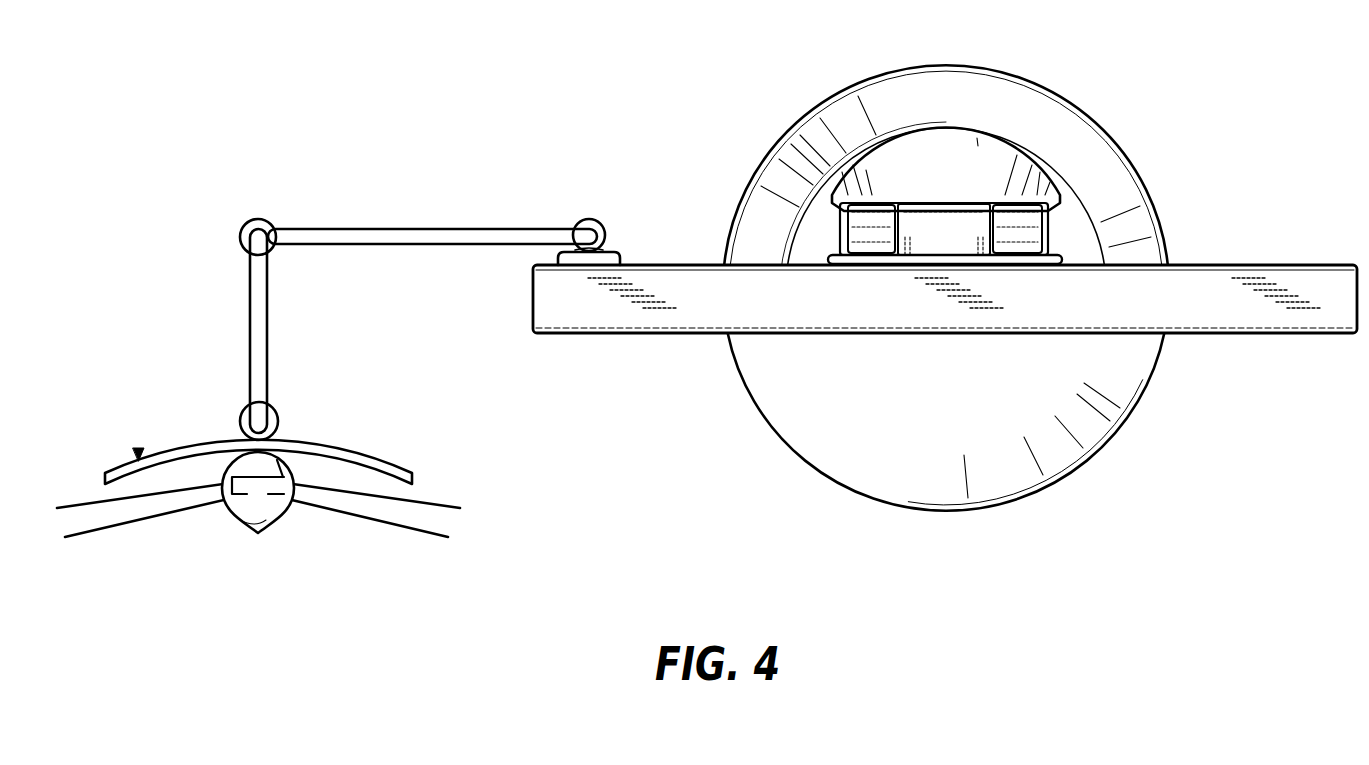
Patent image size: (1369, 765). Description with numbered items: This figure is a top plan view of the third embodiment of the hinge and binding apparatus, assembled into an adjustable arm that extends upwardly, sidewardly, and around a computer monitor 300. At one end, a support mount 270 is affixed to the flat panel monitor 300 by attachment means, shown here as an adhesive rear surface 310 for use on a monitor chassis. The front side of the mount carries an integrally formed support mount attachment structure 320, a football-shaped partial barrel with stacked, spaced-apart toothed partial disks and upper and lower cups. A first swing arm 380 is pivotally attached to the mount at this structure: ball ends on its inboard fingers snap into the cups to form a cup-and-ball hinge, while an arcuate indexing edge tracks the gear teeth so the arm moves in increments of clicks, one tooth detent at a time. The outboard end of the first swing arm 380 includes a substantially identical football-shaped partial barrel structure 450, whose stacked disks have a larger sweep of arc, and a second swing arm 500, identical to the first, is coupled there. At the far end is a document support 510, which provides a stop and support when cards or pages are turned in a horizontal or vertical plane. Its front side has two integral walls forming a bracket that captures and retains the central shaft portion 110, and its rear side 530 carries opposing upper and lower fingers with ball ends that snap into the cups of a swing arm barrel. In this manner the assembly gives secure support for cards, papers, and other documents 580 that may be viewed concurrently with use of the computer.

The central shaft portion 110 is at (240, 518).
The support mount 270 is at (615, 243).
The flat panel monitor 300 is at (1200, 263).
The adhesive rear surface 310 is at (622, 261).
The support mount attachment structure 320 is at (590, 220).
The first swing arm 380 is at (392, 228).
The football-shaped partial barrel structure 450 is at (250, 222).
The second swing arm 500 is at (268, 358).
The document support 510 is at (332, 450).
The rear side 530 is at (138, 449).
The documents 580 is at (433, 503).